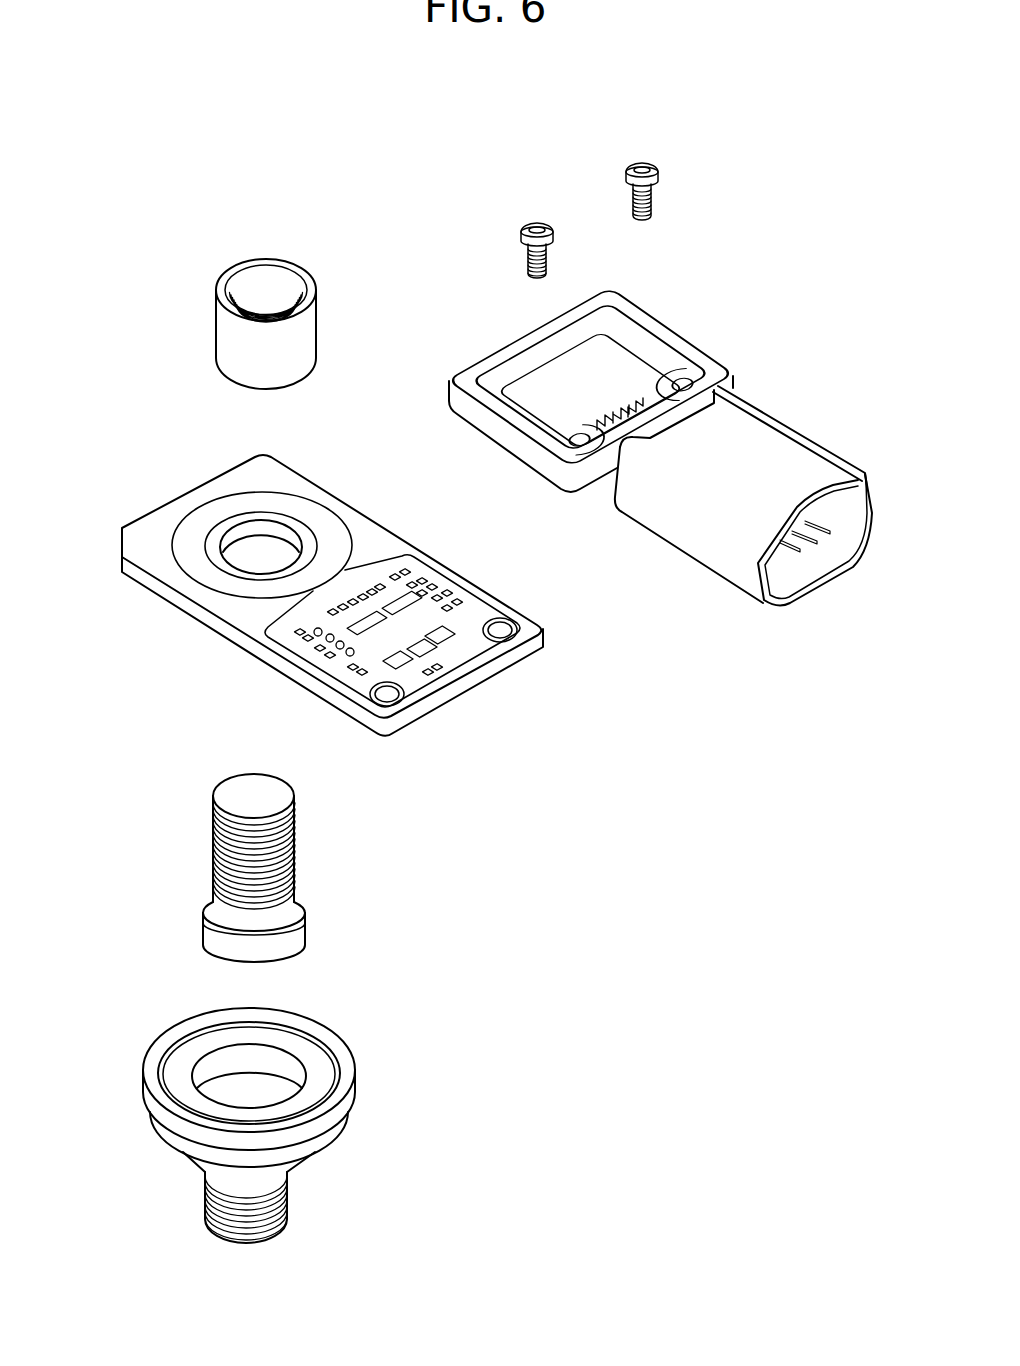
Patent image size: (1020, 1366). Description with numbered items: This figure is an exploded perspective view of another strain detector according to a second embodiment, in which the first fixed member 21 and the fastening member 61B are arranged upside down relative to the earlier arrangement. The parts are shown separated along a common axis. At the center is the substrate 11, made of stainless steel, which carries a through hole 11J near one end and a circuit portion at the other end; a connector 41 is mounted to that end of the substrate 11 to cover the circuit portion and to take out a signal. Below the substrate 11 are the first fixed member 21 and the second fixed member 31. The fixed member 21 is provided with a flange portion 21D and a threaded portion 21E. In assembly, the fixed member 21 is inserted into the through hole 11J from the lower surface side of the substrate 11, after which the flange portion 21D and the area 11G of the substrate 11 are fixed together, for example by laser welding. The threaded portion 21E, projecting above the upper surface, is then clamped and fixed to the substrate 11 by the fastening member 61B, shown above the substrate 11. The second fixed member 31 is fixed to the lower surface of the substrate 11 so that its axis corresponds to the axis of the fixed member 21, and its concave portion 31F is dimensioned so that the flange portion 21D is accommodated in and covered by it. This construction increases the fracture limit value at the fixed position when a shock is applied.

The substrate 11 is at (317, 575).
The through hole 11J is at (270, 547).
The area 11G is at (257, 662).
The first fixed member 21 is at (260, 868).
The threaded portion 21E is at (212, 842).
The flange portion 21D is at (212, 935).
The second fixed member 31 is at (317, 1086).
The concave portion 31F is at (253, 1083).
The connector 41 is at (798, 453).
The fastening member 61B is at (232, 330).